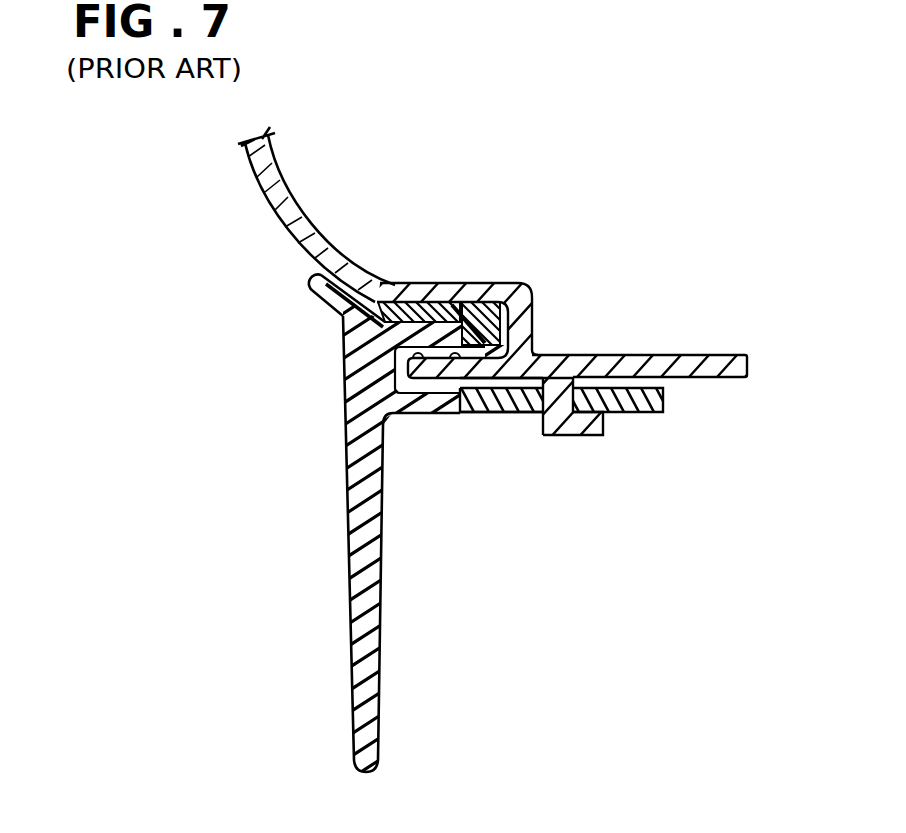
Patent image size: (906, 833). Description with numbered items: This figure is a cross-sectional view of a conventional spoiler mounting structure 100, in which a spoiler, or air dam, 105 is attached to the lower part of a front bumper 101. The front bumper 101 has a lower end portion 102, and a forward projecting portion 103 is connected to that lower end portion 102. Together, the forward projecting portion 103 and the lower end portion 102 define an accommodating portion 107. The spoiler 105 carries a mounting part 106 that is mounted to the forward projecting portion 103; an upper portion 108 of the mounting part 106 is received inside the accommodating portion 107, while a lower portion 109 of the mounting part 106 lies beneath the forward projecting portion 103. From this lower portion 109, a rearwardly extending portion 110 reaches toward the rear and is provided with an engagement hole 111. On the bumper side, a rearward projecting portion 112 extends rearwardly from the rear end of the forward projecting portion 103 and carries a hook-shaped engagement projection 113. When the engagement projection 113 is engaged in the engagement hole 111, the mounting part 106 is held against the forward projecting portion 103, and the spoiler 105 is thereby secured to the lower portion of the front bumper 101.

The spoiler mounting structure 100 is at (230, 430).
The front bumper 101 is at (262, 178).
The lower end portion 102 is at (453, 282).
The forward projecting portion 103 is at (475, 413).
The spoiler 105 is at (315, 588).
The mounting part 106 is at (405, 294).
The accommodating portion 107 is at (500, 350).
The upper portion 108 is at (493, 343).
The lower portion 109 is at (437, 413).
The rearwardly extending portion 110 is at (643, 413).
The engagement hole 111 is at (542, 413).
The rearward projecting portion 112 is at (725, 357).
The engagement projection 113 is at (577, 430).